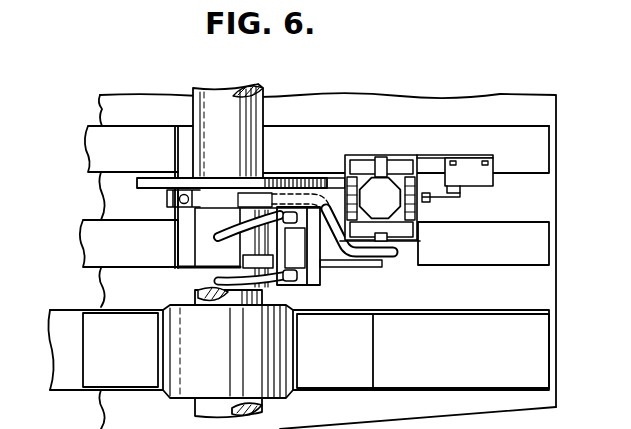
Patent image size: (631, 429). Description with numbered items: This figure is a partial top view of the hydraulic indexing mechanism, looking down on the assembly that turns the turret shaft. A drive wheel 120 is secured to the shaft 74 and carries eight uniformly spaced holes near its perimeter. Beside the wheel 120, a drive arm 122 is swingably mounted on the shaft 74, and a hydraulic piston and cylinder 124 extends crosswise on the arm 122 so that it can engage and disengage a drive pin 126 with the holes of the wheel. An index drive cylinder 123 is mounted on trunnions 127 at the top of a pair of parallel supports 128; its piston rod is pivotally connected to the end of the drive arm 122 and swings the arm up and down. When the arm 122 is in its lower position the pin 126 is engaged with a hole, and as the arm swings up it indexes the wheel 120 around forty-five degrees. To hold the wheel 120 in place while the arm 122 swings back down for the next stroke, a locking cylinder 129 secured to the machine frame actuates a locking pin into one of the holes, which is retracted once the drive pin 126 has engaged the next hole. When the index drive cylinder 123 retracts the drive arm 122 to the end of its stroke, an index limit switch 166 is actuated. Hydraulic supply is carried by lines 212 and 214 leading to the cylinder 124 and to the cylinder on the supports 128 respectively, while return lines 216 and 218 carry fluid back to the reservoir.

The shaft 74 is at (257, 86).
The drive wheel 120 is at (190, 167).
The drive arm 122 is at (333, 188).
The index drive cylinder 123 is at (394, 207).
The hydraulic piston and cylinder 124 is at (303, 262).
The drive pin 126 is at (300, 176).
The trunnions 127 is at (381, 160).
The parallel supports 128 is at (398, 160).
The locking cylinder 129 is at (250, 243).
The index limit switch 166 is at (480, 184).
The line 212 is at (375, 267).
The line 214 is at (210, 233).
The return line 216 is at (394, 256).
The return line 218 is at (200, 283).